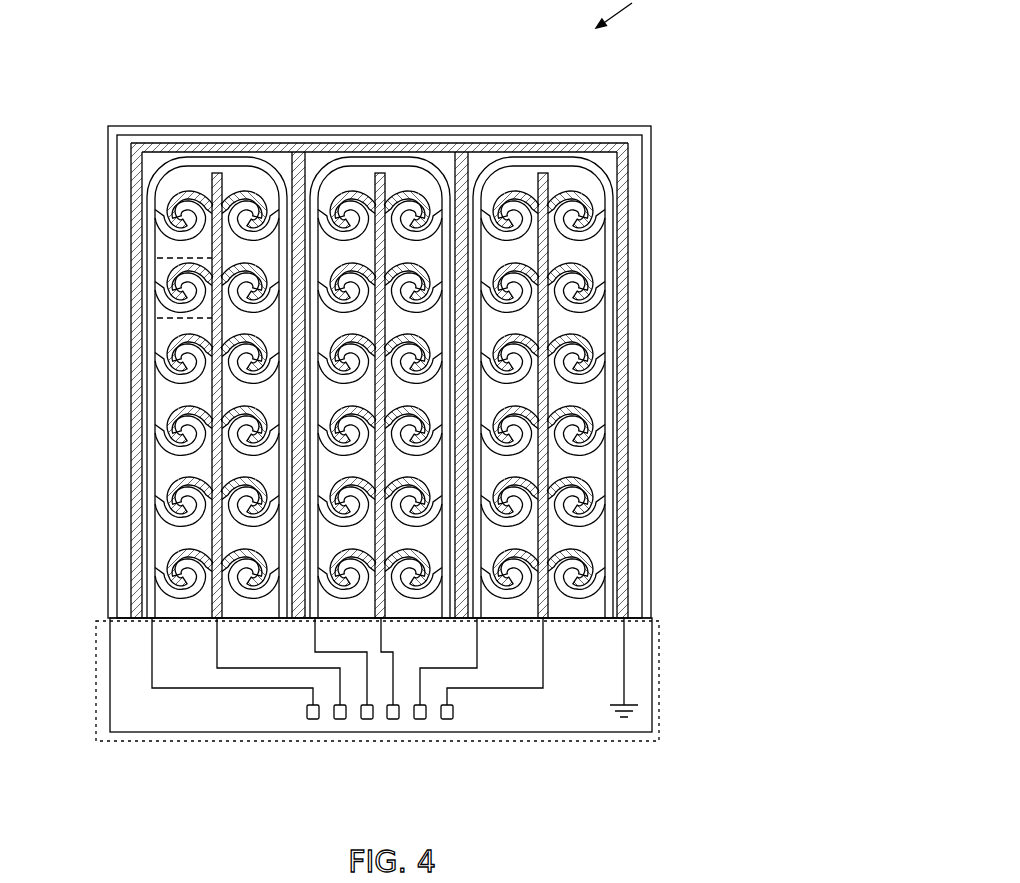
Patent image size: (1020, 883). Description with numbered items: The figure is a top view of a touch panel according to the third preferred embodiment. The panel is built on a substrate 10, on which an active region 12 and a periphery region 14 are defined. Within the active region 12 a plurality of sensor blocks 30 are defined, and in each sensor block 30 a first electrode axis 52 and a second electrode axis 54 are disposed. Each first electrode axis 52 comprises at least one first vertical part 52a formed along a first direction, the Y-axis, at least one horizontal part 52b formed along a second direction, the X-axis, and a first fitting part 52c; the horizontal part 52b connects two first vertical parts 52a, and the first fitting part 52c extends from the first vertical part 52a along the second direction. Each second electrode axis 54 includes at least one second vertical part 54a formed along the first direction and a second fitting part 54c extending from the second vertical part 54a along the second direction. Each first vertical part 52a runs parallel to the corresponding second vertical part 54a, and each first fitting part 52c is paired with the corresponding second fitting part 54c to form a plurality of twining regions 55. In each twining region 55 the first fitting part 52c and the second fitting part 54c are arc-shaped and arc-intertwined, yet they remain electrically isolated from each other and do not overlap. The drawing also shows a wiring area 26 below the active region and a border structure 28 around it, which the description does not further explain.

The substrate 10 is at (121, 126).
The active region 12 is at (352, 134).
The periphery region 14 is at (590, 742).
The wiring region 26 is at (194, 690).
The shielding electrode 28 is at (134, 331).
The sensor block 30 is at (225, 143).
The first electrode axis 52 is at (622, 90).
The first vertical part 52a is at (474, 180).
The horizontal part 52b is at (545, 158).
The first fitting part 52c is at (608, 198).
The second electrode axis 54 is at (181, 420).
The second vertical part 54a is at (552, 328).
The second fitting part 54c is at (170, 275).
The twining region 55 is at (170, 258).